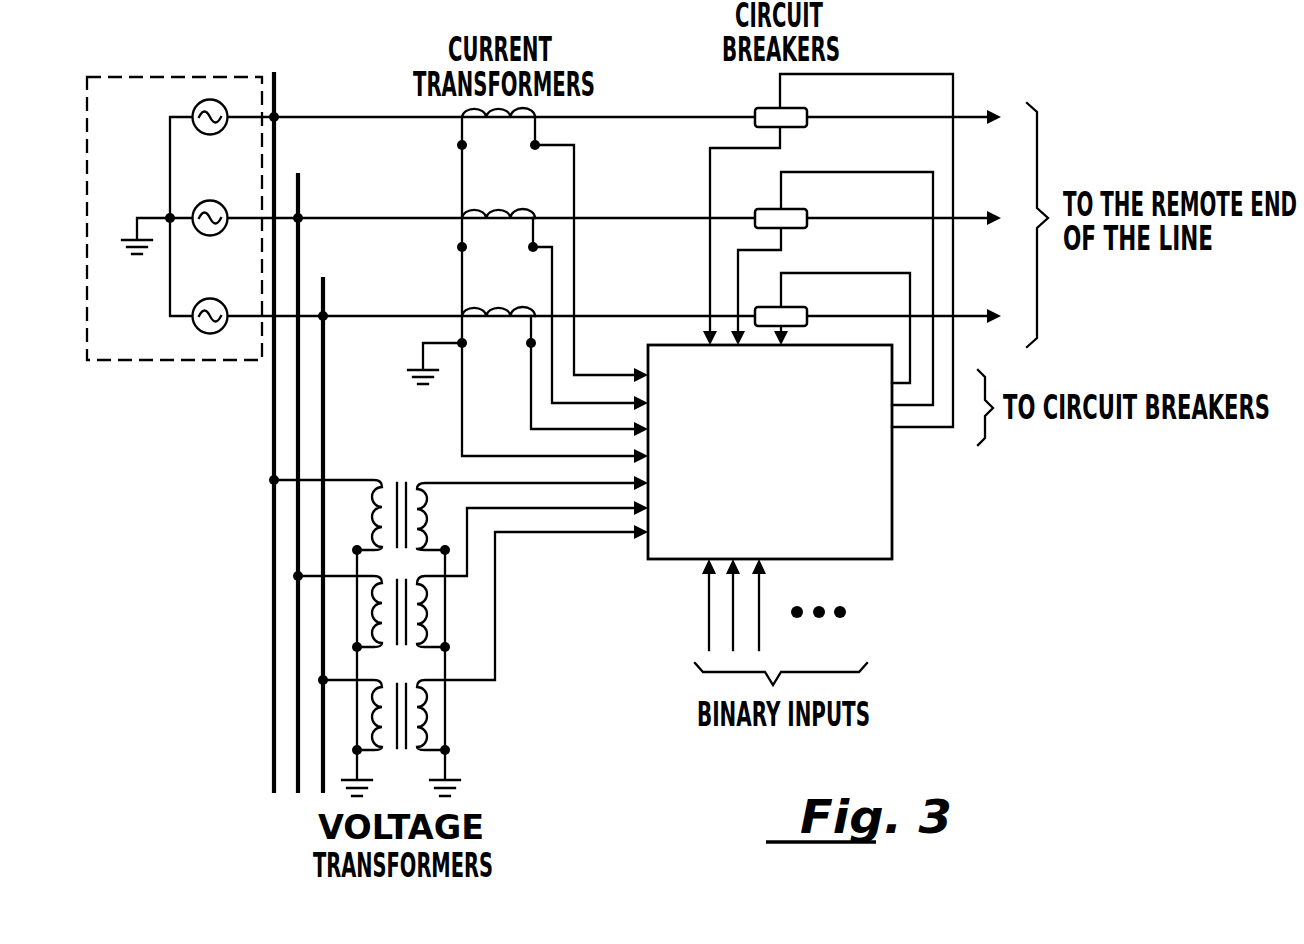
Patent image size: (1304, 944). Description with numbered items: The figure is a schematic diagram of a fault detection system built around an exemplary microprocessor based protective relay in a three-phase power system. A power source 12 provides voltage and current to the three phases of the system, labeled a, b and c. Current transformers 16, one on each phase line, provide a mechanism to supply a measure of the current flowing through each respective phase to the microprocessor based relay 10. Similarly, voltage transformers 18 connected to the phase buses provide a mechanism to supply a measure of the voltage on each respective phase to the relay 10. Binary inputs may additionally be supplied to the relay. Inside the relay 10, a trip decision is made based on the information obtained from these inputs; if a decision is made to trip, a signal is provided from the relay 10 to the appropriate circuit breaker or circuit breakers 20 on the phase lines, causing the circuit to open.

The microprocessor based relay 10 is at (885, 531).
The power source 12 is at (162, 75).
The current transformers 16 is at (462, 120).
The voltage transformers 18 is at (380, 520).
The circuit breakers 20 is at (758, 110).